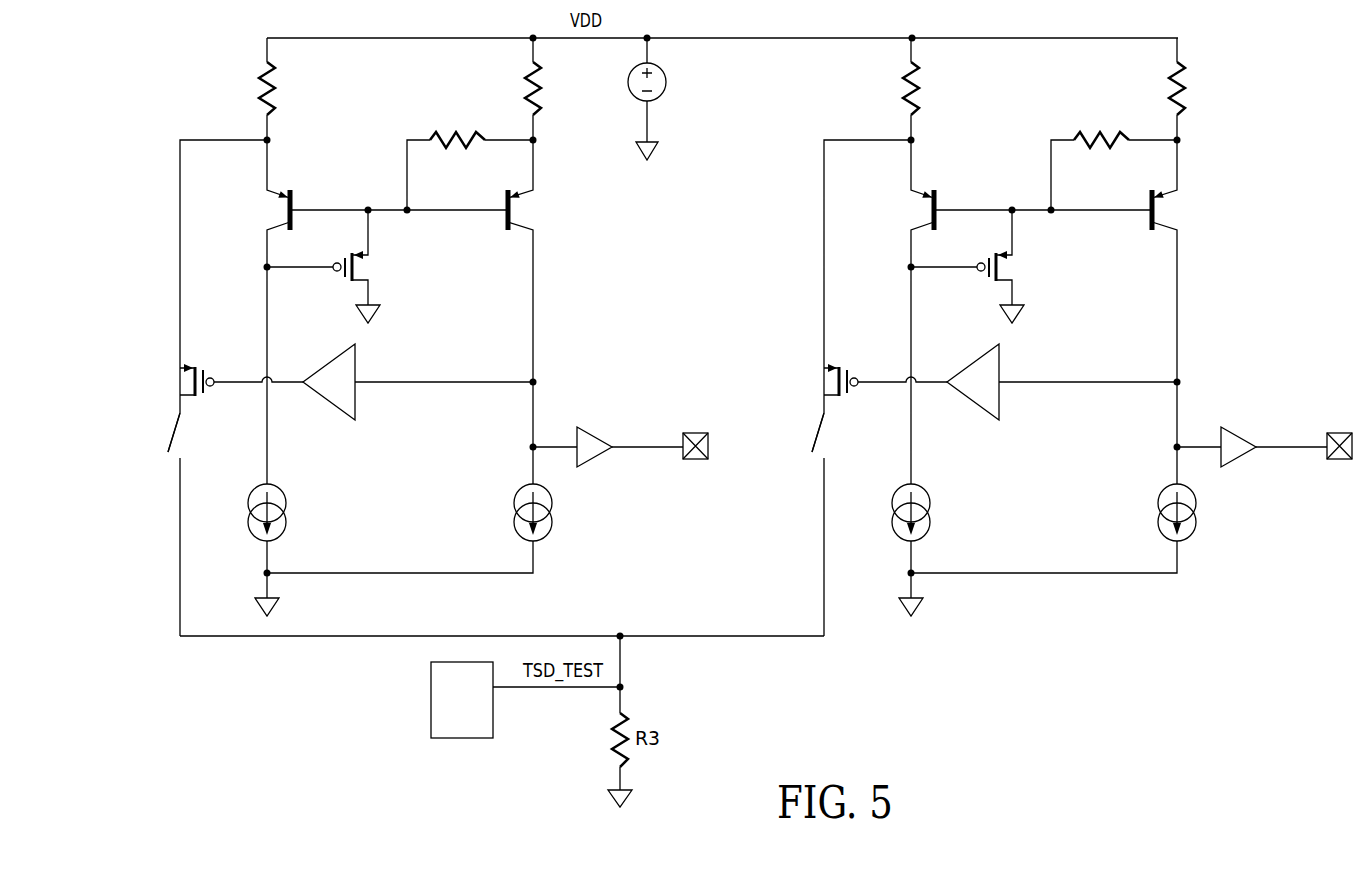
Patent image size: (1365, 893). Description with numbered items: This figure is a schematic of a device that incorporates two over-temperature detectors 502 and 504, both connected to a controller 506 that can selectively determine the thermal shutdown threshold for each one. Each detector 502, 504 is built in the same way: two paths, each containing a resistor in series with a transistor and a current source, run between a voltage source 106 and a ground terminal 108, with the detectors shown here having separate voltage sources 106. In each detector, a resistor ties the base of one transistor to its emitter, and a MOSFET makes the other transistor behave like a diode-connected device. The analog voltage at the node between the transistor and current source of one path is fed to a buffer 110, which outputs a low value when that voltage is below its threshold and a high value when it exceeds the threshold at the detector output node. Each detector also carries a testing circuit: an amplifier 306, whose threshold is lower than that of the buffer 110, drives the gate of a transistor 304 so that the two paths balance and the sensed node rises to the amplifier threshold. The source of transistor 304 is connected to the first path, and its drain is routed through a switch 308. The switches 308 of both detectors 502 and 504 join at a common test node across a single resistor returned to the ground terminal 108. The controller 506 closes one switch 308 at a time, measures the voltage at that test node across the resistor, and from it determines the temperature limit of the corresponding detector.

The voltage source 106 is at (666, 80).
The ground terminal 108 is at (655, 149).
The buffer 110 is at (588, 430).
The transistor 304 is at (198, 361).
The amplifier 306 is at (322, 357).
The switch 308 is at (175, 442).
The over-temperature detector 502 is at (671, 559).
The over-temperature detector 504 is at (1293, 559).
The controller 506 is at (460, 739).